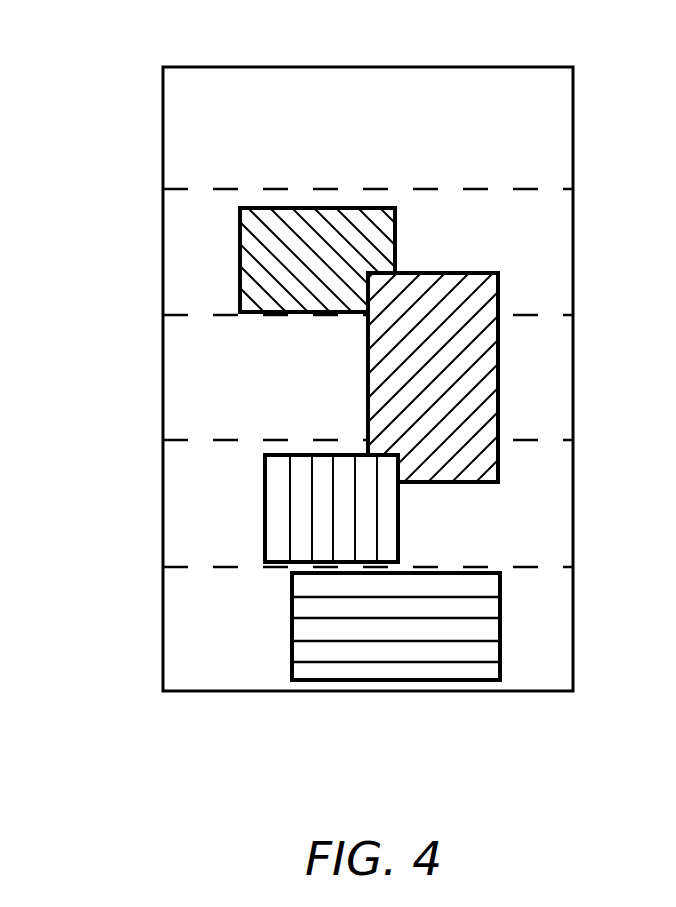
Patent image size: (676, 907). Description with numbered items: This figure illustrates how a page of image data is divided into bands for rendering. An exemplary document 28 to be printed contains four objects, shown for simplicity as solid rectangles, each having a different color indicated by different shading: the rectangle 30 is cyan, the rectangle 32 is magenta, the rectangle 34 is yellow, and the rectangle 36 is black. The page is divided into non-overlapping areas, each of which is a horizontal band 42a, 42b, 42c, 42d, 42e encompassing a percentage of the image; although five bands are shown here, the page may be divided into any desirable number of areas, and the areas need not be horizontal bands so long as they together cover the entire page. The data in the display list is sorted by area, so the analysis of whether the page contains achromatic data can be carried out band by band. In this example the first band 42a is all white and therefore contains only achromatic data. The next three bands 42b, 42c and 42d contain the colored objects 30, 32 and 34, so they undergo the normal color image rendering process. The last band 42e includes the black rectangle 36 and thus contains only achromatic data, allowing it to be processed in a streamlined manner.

The document 28 is at (420, 65).
The rectangle 30 is at (345, 214).
The rectangle 32 is at (445, 298).
The rectangle 34 is at (292, 485).
The rectangle 36 is at (422, 600).
The first band 42a is at (176, 165).
The band 42b is at (176, 278).
The band 42c is at (176, 391).
The band 42d is at (177, 528).
The last band 42e is at (177, 666).